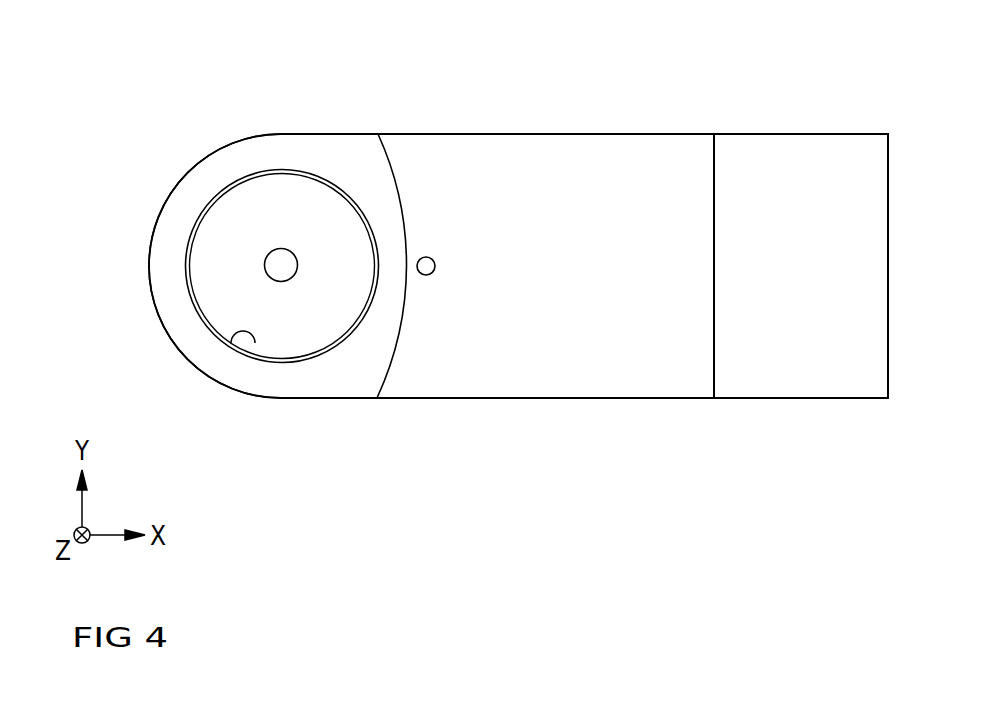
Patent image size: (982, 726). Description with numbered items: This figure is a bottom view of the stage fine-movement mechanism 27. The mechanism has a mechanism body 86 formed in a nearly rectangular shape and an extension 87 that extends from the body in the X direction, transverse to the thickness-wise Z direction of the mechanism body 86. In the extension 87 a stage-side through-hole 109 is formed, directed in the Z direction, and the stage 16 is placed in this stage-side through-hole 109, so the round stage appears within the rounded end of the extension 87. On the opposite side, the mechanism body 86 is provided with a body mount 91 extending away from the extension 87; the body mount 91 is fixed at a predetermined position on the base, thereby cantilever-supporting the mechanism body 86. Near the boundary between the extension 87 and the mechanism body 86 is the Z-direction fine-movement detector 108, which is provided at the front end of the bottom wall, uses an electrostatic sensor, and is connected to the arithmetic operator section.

The stage fine-movement mechanism 27 is at (785, 121).
The mechanism body 86 is at (625, 375).
The body mount 91 is at (847, 375).
The extension 87 is at (310, 377).
The stage 16 is at (230, 225).
The stage-side through-hole 109 is at (254, 342).
The Z-direction fine-movement detector 108 is at (426, 276).